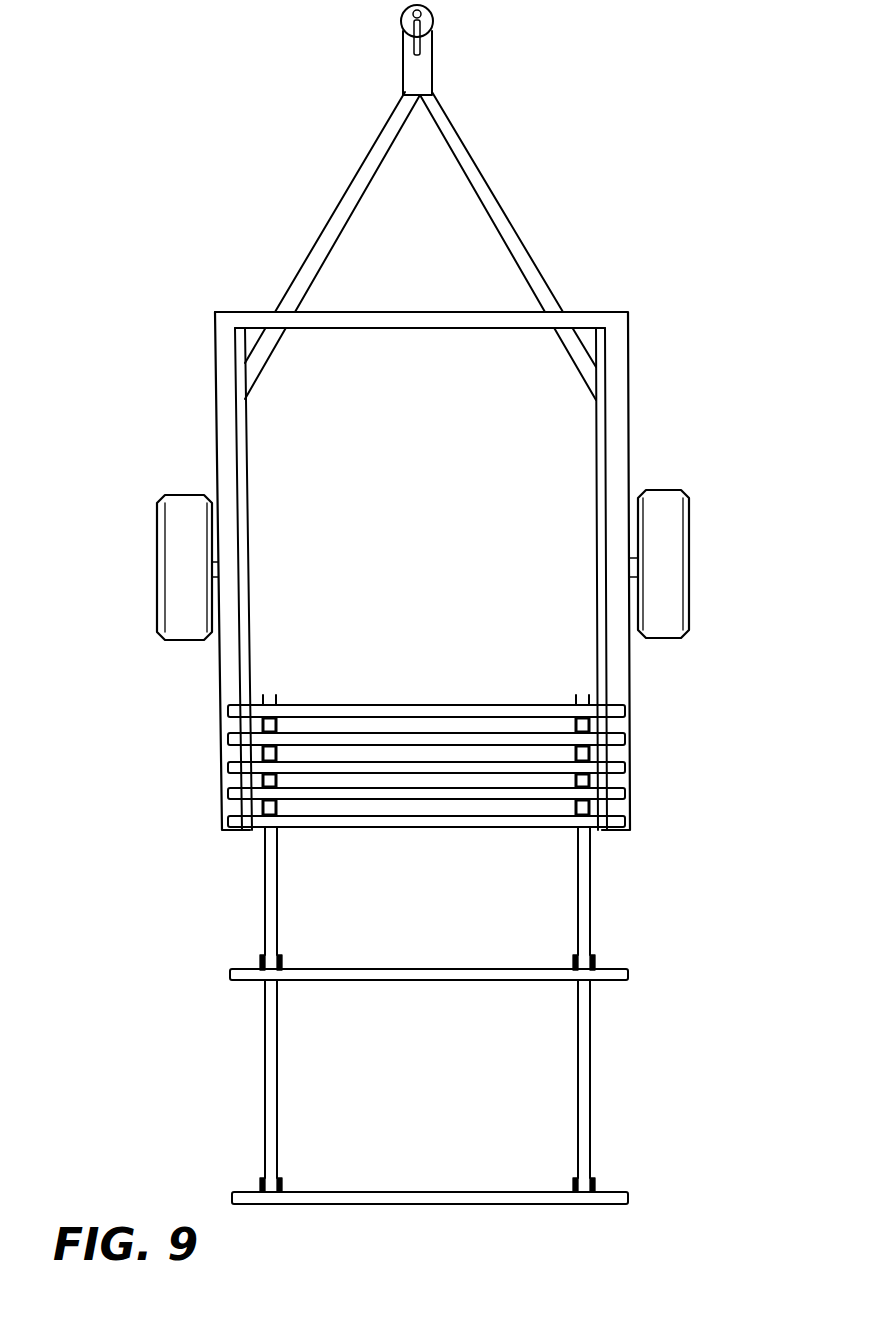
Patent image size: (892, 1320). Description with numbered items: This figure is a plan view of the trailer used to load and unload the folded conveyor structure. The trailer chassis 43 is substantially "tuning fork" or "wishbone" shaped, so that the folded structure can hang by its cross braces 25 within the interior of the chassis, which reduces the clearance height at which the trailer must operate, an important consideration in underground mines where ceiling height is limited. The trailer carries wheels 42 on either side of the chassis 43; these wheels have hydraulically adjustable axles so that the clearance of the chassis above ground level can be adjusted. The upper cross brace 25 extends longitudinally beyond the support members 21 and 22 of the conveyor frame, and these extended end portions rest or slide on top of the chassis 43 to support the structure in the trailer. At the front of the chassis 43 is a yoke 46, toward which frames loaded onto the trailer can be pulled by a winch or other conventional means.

The yoke 46 is at (442, 88).
The trailer chassis 43 is at (617, 375).
The wheels 42 is at (178, 528).
The upper cross brace 25 is at (622, 822).
The support member 21 is at (583, 900).
The support member 22 is at (583, 1078).